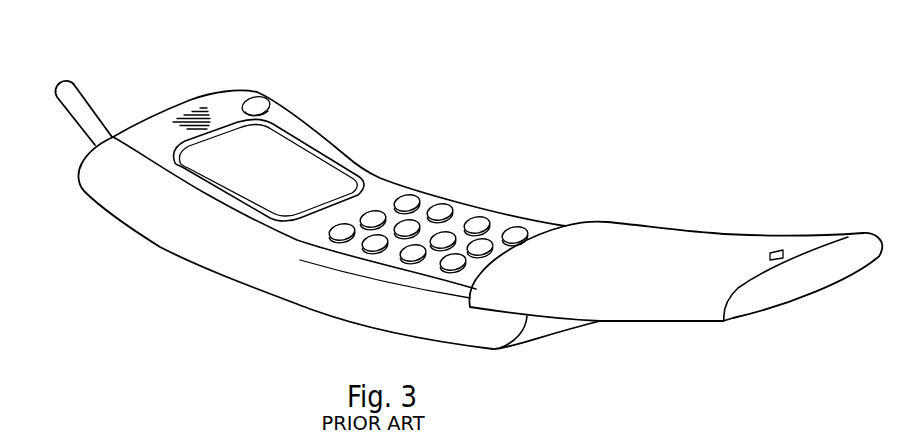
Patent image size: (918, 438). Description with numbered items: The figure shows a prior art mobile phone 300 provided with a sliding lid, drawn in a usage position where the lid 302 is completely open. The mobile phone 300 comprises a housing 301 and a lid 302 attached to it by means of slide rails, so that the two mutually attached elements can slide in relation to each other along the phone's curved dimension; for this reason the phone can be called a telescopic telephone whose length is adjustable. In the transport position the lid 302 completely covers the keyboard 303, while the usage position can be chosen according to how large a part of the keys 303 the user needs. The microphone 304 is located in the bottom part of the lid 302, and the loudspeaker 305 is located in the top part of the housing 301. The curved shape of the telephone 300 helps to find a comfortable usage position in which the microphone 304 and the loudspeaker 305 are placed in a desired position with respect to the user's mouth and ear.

The mobile phone 300 is at (128, 312).
The housing 301 is at (163, 217).
The lid 302 is at (727, 243).
The keyboard 303 is at (444, 238).
The microphone 304 is at (782, 259).
The loudspeaker 305 is at (203, 117).